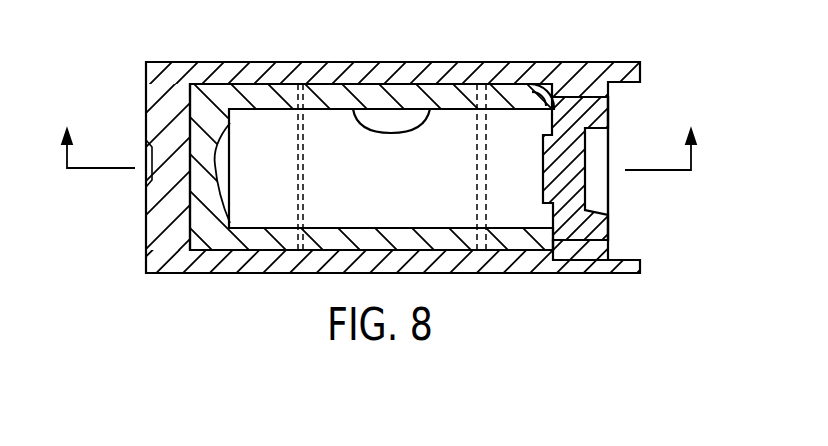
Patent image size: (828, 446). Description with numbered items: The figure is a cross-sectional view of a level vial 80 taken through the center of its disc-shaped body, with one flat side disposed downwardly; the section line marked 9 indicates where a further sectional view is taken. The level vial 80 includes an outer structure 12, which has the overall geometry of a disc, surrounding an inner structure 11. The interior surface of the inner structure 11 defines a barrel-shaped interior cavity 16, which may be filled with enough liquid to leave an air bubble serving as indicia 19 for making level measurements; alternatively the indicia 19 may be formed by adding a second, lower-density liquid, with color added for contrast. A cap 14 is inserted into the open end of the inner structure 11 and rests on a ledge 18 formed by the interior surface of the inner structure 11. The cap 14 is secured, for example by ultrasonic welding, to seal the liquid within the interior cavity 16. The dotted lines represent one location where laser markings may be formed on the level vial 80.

The level vial 80 is at (119, 215).
The outer structure 12 is at (278, 70).
The inner structure 11 is at (320, 95).
The indicia 19 is at (378, 116).
The interior cavity 16 is at (452, 145).
The ledge 18 is at (540, 97).
The cap 14 is at (573, 97).
The section line 9- 9 is at (378, 133).